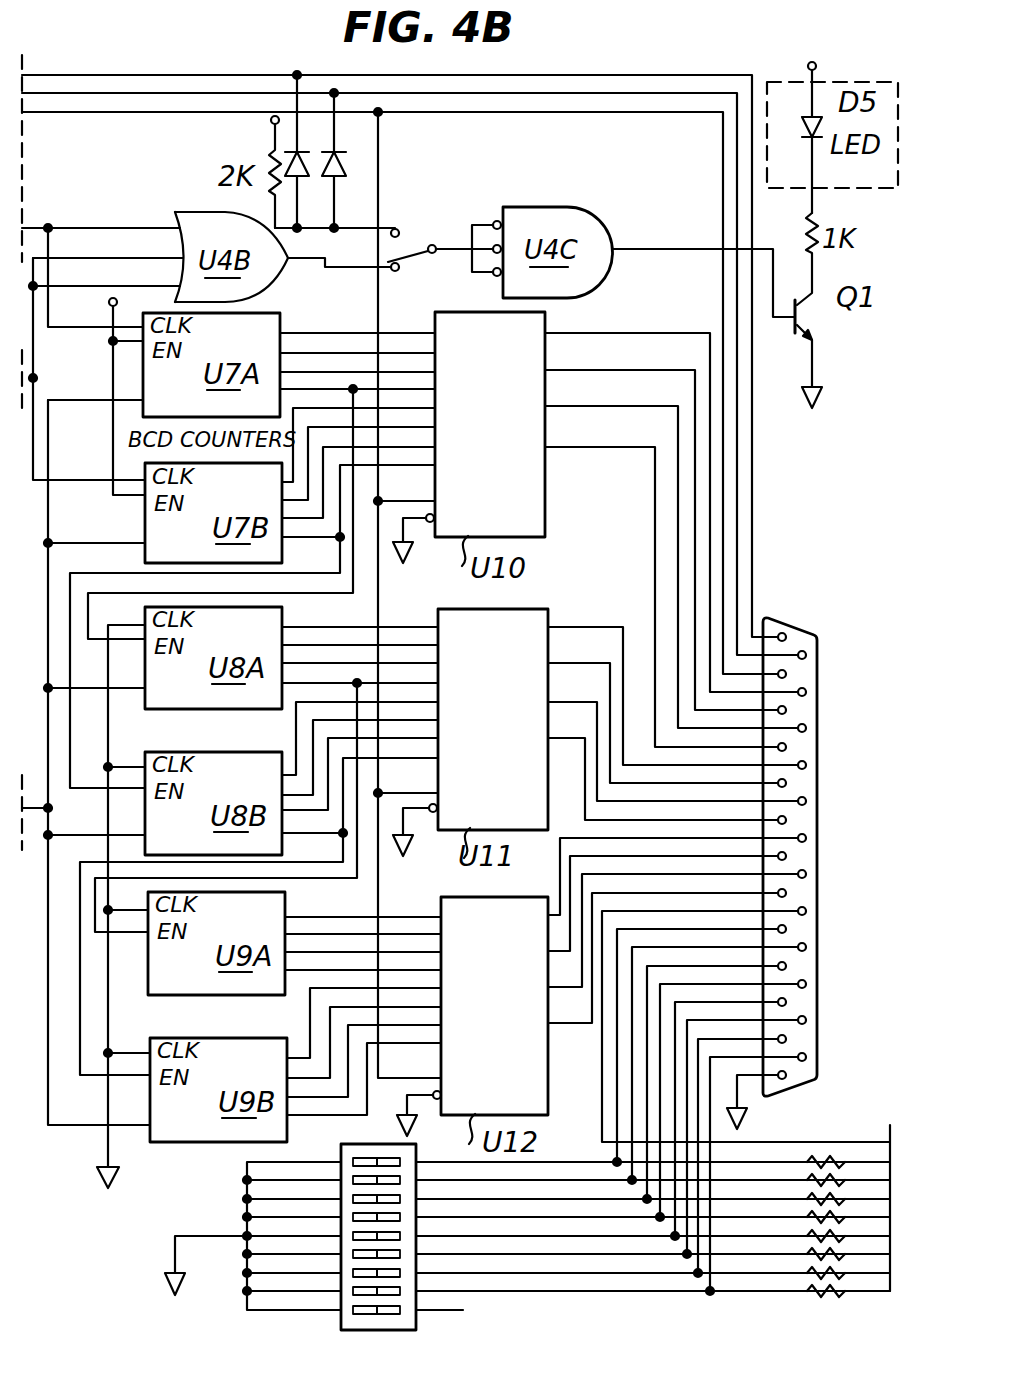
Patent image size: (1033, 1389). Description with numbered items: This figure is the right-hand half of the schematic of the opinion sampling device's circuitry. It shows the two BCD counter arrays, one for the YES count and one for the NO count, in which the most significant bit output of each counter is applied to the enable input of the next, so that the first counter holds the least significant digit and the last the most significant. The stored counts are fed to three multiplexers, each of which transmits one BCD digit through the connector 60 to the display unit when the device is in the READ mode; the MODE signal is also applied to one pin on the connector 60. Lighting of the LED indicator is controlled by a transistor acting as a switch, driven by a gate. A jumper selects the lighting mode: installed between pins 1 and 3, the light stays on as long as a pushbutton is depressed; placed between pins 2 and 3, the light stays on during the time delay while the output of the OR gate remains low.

The connector 60 is at (818, 632).
The jumper pin 1 is at (393, 218).
The jumper pin 2 is at (405, 277).
The jumper pin 3 is at (449, 265).